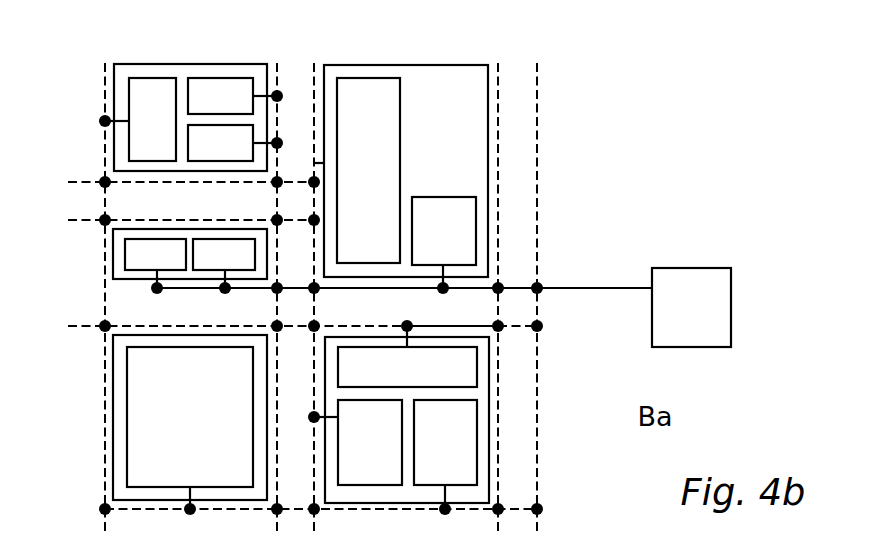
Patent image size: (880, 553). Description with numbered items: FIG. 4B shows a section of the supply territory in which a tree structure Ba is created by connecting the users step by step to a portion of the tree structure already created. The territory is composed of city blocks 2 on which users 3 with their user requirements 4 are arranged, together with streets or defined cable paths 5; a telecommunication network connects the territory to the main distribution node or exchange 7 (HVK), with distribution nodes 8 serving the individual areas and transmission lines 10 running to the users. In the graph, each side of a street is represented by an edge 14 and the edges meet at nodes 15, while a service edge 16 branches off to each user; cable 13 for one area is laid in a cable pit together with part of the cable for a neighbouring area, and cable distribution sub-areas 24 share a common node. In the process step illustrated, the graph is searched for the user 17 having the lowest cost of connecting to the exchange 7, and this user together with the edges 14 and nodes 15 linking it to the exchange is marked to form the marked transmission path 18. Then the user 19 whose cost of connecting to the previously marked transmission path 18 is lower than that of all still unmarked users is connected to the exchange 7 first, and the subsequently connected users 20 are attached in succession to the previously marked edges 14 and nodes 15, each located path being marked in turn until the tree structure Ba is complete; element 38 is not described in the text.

The city block 2 is at (447, 102).
The user 3 is at (234, 265).
The user requirements 4 is at (167, 265).
The streets or defined cable path 5 is at (232, 96).
The main distribution node or exchange 7 is at (690, 277).
The distribution nodes 8 is at (214, 195).
The transmission line to user 10 is at (253, 281).
The cable for area E 13 is at (443, 250).
The edge 14 is at (540, 97).
The node 15 is at (545, 286).
The service edge 16 is at (445, 454).
The user with the lowest cost of connection to the exchange 17 is at (593, 147).
The marked transmission path 18 is at (580, 300).
The user with the lowest cost of connection to the marked transmission path 19 is at (580, 453).
The subsequently connected users 20 is at (213, 247).
The cable distribution sub-areas whose limit edges are attached to the same node 24 is at (338, 174).
The actuator module 38 is at (190, 428).